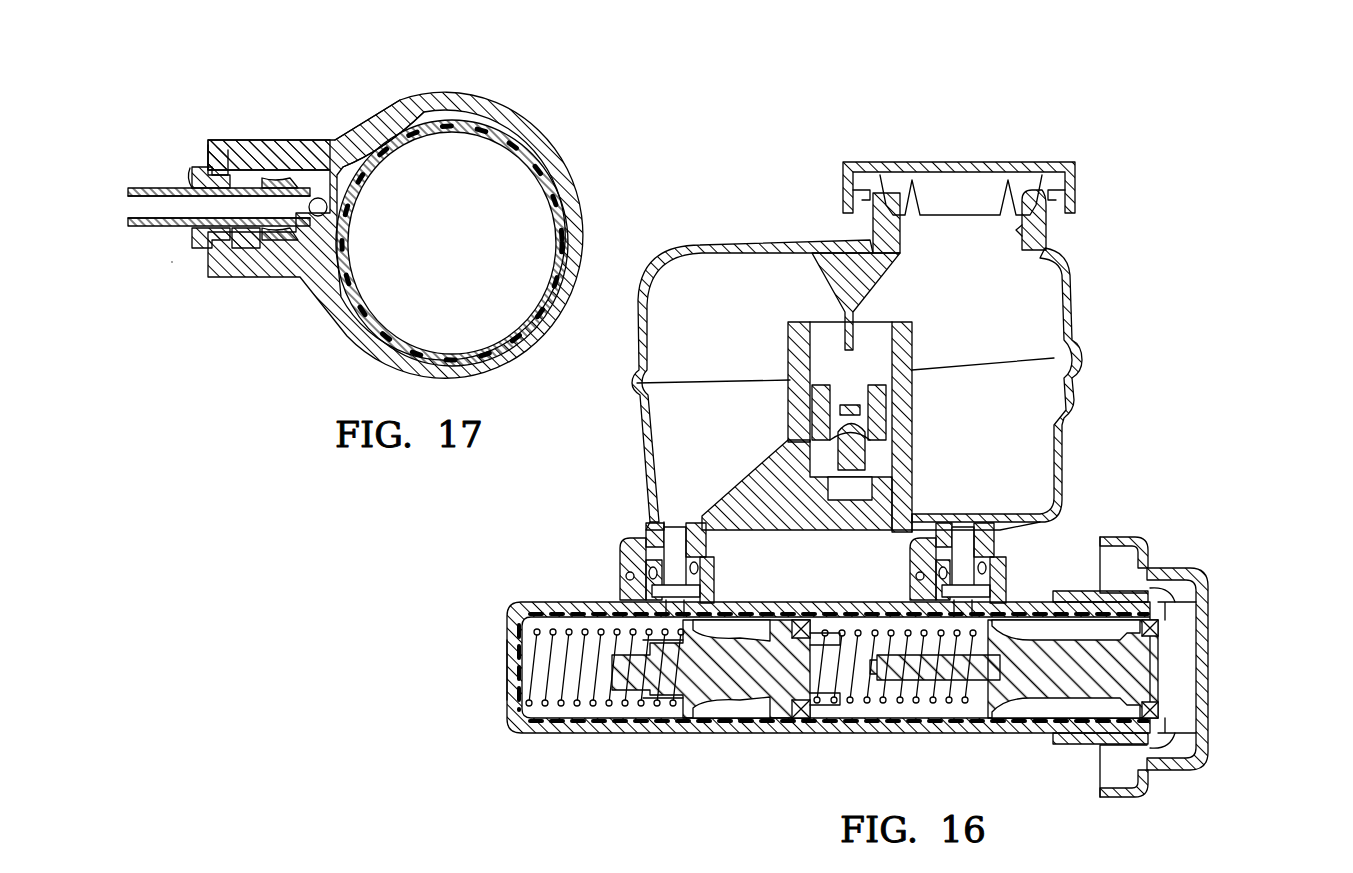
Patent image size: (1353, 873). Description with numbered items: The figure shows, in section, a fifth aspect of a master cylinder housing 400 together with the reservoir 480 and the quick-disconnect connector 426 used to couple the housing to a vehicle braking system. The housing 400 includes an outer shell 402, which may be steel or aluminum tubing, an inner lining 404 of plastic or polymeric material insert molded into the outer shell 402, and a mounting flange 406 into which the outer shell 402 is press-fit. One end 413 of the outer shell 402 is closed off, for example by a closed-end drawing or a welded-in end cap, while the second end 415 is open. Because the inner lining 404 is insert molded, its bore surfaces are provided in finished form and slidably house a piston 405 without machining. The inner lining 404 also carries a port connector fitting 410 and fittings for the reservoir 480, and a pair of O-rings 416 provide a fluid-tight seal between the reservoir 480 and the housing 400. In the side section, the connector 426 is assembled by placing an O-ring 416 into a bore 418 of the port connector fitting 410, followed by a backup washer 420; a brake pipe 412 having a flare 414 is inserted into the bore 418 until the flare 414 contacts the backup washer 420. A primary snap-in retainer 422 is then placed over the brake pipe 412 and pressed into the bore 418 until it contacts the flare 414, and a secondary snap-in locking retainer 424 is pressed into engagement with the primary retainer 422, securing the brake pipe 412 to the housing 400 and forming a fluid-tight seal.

In FIG. 17, the master cylinder housing 400 is at (352, 200).
In FIG. 16, the master cylinder housing 400 is at (480, 625).
In FIG. 17, the outer shell 402 is at (482, 98).
In FIG. 16, the outer shell 402 is at (678, 735).
In FIG. 17, the inner lining 404 is at (518, 150).
In FIG. 16, the inner lining 404 is at (590, 735).
In FIG. 16, the piston 405 is at (748, 700).
In FIG. 16, the mounting flange 406 is at (1135, 798).
In FIG. 17, the port connector fitting 410 is at (262, 140).
In FIG. 17, the brake pipe 412 is at (128, 226).
In FIG. 16, the one end 413 is at (507, 703).
In FIG. 17, the flare 414 is at (196, 188).
In FIG. 16, the second end 415 is at (1216, 662).
In FIG. 17, the O-ring 416 is at (278, 244).
In FIG. 16, the O-ring 416 is at (706, 575).
In FIG. 17, the bore 418 is at (322, 143).
In FIG. 17, the backup washer 420 is at (262, 246).
In FIG. 17, the primary snap-in retainer 422 is at (218, 250).
In FIG. 17, the secondary snap-in locking retainer 424 is at (192, 168).
In FIG. 17, the quick-disconnect connector 426 is at (172, 263).
In FIG. 16, the reservoir 480 is at (1075, 262).